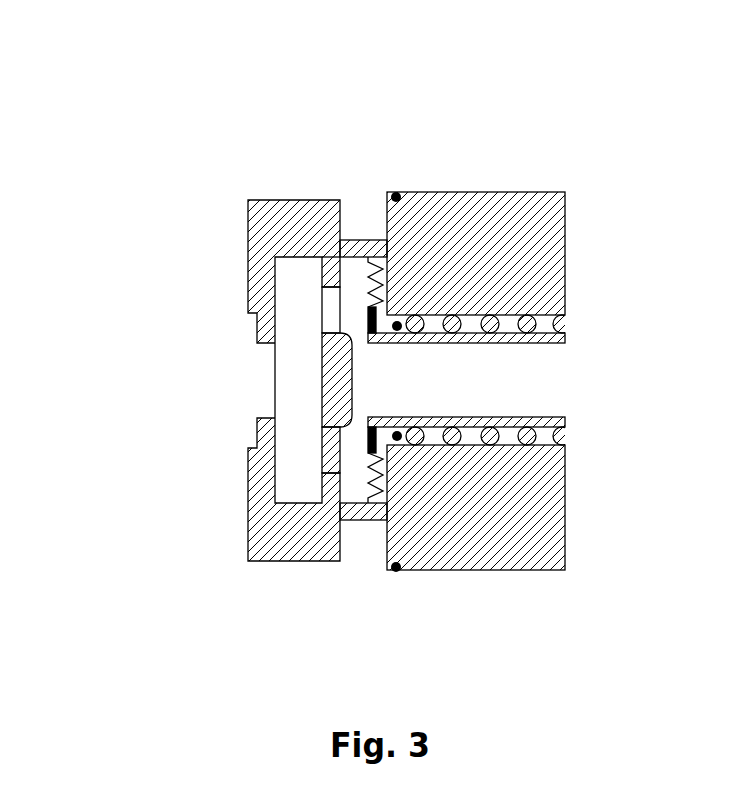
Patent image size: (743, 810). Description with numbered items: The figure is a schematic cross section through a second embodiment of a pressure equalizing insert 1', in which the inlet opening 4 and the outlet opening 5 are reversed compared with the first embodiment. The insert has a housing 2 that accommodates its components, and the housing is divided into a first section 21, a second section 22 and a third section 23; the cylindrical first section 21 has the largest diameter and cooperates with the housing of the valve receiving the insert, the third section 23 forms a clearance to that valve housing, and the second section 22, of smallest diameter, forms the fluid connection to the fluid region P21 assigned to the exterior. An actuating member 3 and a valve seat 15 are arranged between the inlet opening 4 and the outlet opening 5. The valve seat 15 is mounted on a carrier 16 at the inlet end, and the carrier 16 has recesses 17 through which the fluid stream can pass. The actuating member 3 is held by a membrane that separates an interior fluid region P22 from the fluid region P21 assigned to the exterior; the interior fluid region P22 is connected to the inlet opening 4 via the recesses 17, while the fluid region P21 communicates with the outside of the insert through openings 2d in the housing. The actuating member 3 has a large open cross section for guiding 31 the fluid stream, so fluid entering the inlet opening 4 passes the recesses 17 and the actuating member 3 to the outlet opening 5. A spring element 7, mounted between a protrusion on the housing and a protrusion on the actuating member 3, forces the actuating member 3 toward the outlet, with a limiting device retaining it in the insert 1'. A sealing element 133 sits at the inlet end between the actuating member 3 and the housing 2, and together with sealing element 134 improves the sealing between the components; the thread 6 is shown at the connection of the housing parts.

The pressure equalizing insert 1' is at (126, 606).
The housing 2 is at (250, 230).
The openings 2d is at (378, 240).
The actuating member 3 is at (567, 343).
The inlet opening 4 is at (233, 372).
The outlet opening 5 is at (582, 383).
The thread 6 is at (365, 470).
The spring element 7 is at (490, 320).
The valve seat 15 is at (349, 338).
The carrier 16 is at (325, 385).
The recesses 17 is at (330, 318).
The first section of the housing 21 is at (507, 578).
The second section of the housing 22 is at (367, 580).
The third section of the housing 23 is at (287, 578).
The guiding of a fluid stream 31 is at (522, 382).
The sealing element 133 is at (398, 325).
The sealing element 134 is at (396, 196).
The fluid region assigned to the exterior P21 is at (415, 542).
The interior fluid region P22 is at (362, 487).